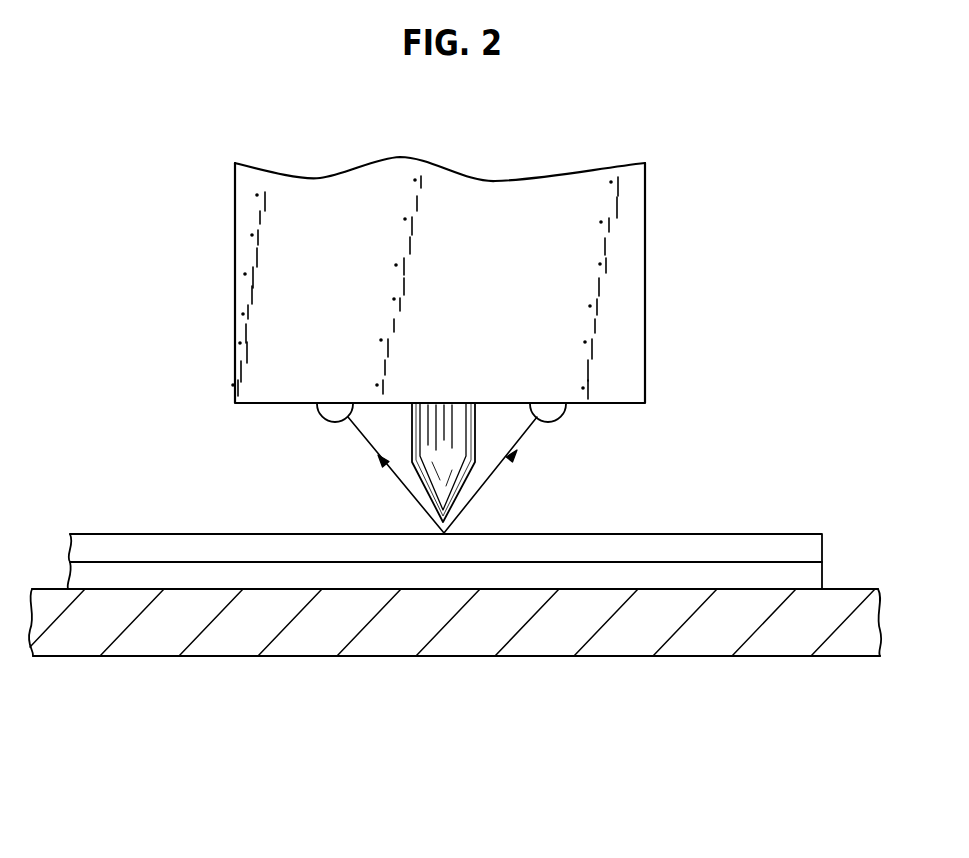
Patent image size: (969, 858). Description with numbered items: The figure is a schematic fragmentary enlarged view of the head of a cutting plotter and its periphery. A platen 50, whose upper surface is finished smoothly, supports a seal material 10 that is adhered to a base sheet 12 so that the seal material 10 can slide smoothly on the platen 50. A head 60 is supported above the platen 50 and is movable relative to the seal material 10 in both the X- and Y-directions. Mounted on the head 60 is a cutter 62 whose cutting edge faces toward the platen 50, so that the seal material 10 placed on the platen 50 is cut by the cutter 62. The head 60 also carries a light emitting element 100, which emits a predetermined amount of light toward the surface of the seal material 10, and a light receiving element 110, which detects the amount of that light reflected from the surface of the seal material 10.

The head 60 is at (645, 249).
The cutter 62 is at (477, 423).
The light receiving element 110 is at (323, 420).
The light emitting element 100 is at (561, 420).
The seal material 10 is at (822, 545).
The base sheet 12 is at (826, 576).
The platen 50 is at (460, 656).